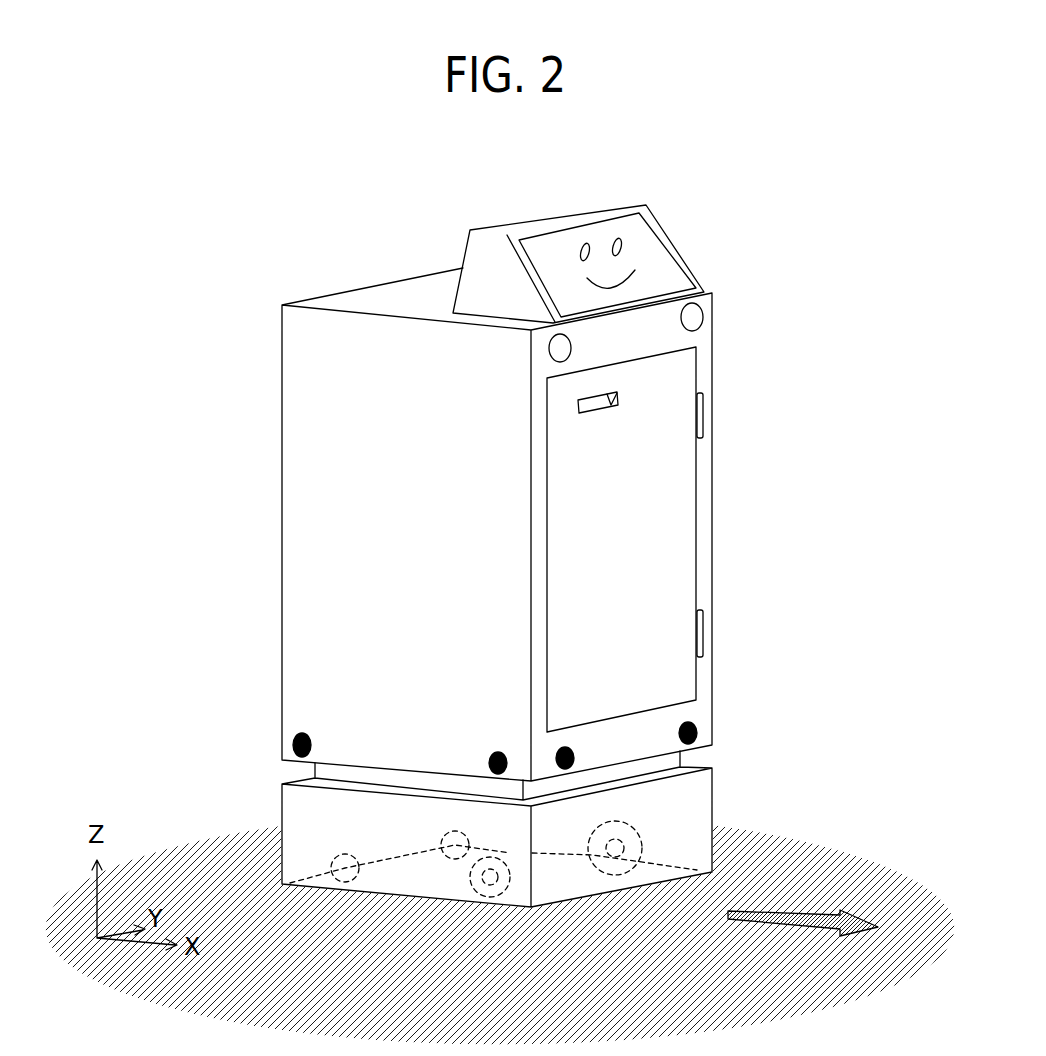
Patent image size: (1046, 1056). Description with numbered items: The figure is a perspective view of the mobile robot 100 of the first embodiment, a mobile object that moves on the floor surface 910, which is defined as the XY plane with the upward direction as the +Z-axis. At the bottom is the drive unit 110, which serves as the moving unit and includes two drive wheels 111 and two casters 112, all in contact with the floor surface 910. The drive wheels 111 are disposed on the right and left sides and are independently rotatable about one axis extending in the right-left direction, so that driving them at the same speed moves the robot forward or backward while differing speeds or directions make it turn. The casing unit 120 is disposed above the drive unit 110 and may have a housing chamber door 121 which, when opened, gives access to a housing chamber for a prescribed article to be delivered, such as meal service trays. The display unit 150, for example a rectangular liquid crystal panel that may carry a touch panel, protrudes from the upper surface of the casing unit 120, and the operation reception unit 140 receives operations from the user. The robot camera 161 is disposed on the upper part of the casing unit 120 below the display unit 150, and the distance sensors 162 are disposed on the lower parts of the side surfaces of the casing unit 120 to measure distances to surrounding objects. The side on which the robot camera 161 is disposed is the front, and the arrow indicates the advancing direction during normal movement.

The mobile robot 100 is at (267, 257).
The drive unit 110 is at (566, 774).
The drive wheels 111 is at (645, 842).
The casters 112 is at (333, 857).
The casing unit 120 is at (549, 522).
The housing chamber door 121 is at (662, 492).
The operation reception unit 140 is at (619, 243).
The display unit 150 is at (660, 277).
The robot camera 161 is at (688, 323).
The distance sensors 162 is at (300, 740).
The floor surface 910 is at (805, 865).